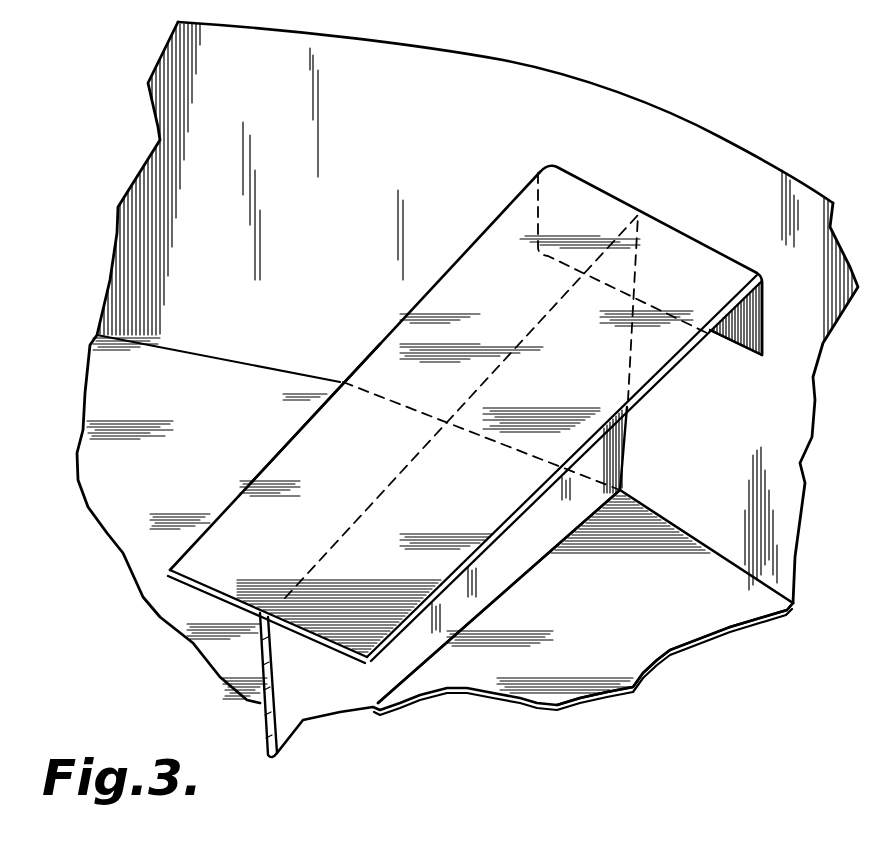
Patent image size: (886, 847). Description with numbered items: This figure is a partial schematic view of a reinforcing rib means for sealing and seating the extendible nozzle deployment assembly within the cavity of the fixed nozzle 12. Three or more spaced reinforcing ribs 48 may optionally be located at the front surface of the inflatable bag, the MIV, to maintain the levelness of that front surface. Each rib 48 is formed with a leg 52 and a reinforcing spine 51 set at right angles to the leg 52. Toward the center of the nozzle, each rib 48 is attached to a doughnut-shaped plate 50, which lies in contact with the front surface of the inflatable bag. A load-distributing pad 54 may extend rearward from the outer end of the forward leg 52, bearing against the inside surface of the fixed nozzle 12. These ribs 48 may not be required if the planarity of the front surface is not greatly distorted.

The fixed nozzle 12 is at (505, 60).
The reinforcing rib 48 is at (472, 232).
The doughnut-shaped plate 50 is at (636, 660).
The reinforcing spine 51 is at (553, 556).
The leg 52 is at (278, 455).
The load-distributing pad 54 is at (767, 322).